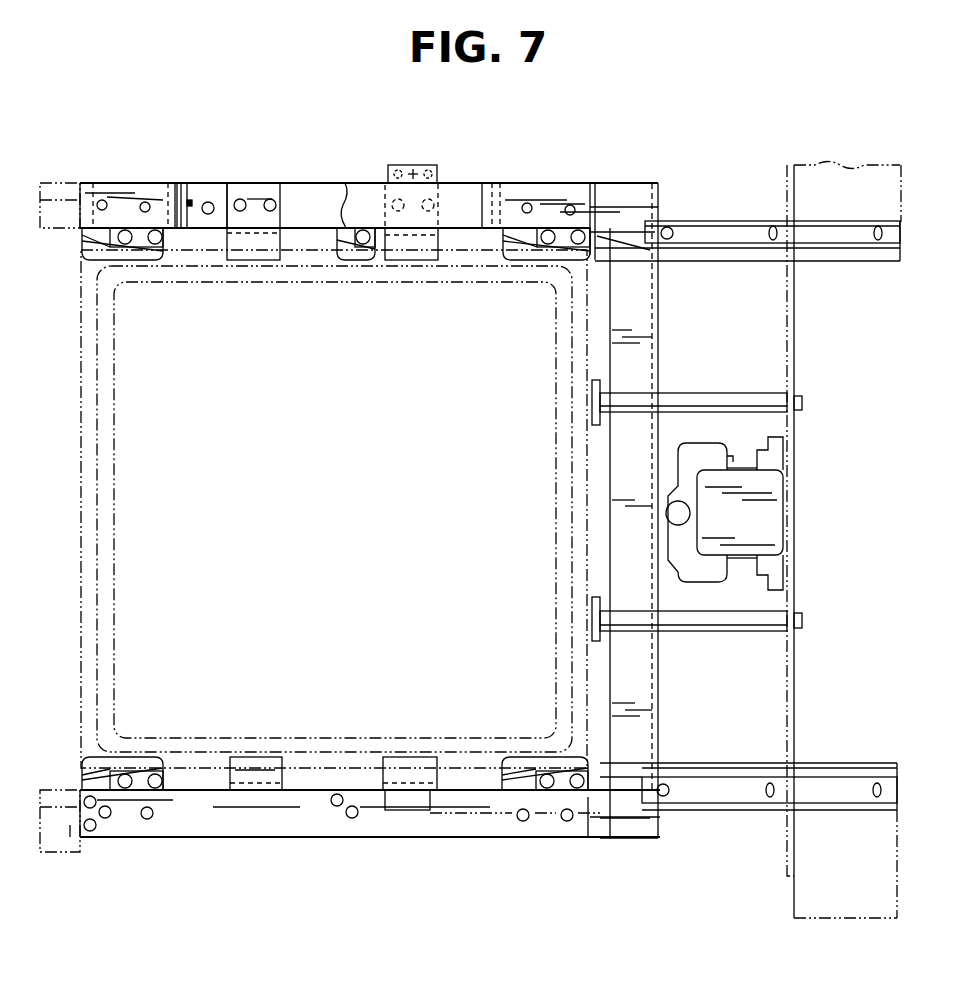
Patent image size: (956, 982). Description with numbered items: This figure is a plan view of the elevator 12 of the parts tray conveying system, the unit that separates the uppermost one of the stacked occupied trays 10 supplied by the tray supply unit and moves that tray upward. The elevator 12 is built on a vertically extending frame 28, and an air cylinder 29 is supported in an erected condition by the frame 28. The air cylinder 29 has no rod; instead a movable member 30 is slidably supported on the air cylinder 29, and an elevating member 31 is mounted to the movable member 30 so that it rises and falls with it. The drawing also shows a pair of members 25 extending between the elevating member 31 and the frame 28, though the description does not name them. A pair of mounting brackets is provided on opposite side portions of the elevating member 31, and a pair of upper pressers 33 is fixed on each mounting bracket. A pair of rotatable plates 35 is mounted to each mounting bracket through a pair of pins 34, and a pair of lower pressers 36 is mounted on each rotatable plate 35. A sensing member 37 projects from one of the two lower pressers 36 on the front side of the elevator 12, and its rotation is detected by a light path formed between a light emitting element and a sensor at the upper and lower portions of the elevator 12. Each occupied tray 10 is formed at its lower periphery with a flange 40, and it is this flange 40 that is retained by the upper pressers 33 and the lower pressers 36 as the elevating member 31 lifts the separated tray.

The occupied tray 10 is at (98, 527).
The elevator 12 is at (683, 180).
The shaft 25 is at (591, 404).
The frame 28 is at (797, 685).
The air cylinder 29 is at (762, 513).
The movable member 30 is at (702, 577).
The elevating member 31 is at (640, 323).
The upper presser 33 is at (255, 188).
The pin 34 is at (182, 185).
The rotatable plate 35 is at (483, 823).
The lower presser 36 is at (143, 262).
The sensing member 37 is at (73, 840).
The flange 40 is at (80, 647).